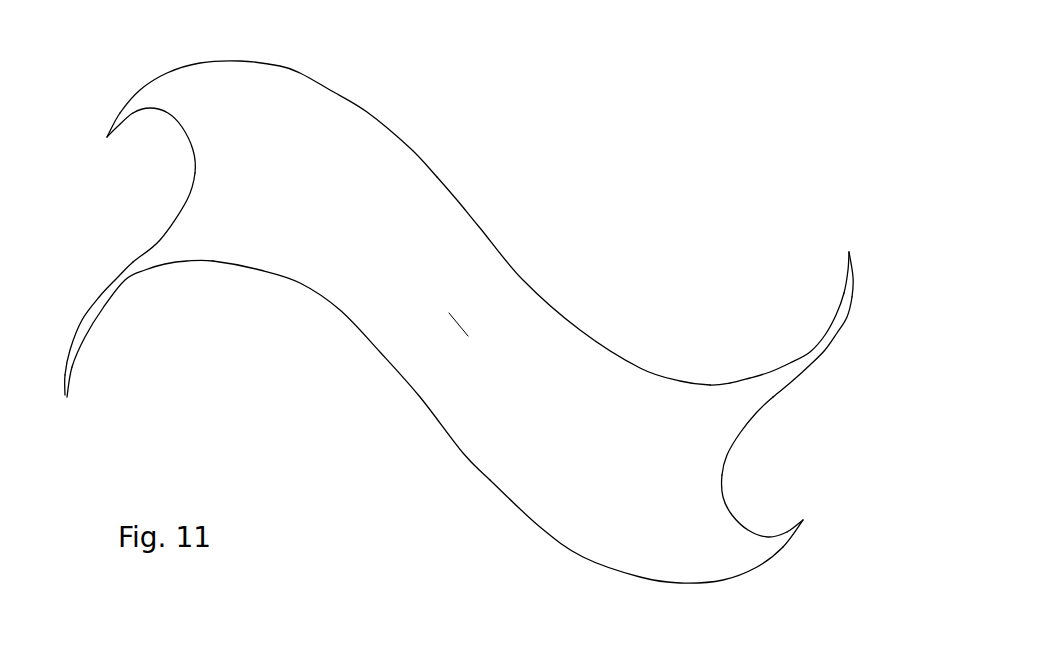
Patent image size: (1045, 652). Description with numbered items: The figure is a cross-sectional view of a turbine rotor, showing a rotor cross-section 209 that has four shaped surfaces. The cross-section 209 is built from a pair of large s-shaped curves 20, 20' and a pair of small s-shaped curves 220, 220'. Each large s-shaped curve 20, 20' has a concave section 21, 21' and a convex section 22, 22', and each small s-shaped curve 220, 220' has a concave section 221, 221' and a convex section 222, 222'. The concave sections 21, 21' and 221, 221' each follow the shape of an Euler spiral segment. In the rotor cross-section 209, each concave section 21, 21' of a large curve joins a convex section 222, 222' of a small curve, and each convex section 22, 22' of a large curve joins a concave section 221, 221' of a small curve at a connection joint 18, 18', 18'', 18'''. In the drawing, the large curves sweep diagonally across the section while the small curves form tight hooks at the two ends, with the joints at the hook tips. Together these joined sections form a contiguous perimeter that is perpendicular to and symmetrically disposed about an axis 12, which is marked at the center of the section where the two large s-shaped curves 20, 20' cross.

The rotor cross-section 209 is at (552, 192).
The convex section 22 is at (278, 109).
The large s-shaped curve 20 is at (573, 243).
The concave section 21 is at (777, 314).
The connection joint 18 is at (882, 260).
The convex section 222 is at (862, 347).
The small s-shaped curve 220 is at (815, 436).
The concave section 221 is at (788, 505).
The connection joint 18' is at (827, 527).
The convex section 22' is at (604, 531).
The large s-shaped curve 20' is at (351, 370).
The concave section 21' is at (150, 313).
The connection joint 18'' is at (104, 391).
The convex section 222' is at (82, 313).
The small s-shaped curve 220' is at (133, 217).
The concave section 221' is at (141, 146).
The connection joint 18''' is at (83, 133).
The axis 12 is at (465, 312).